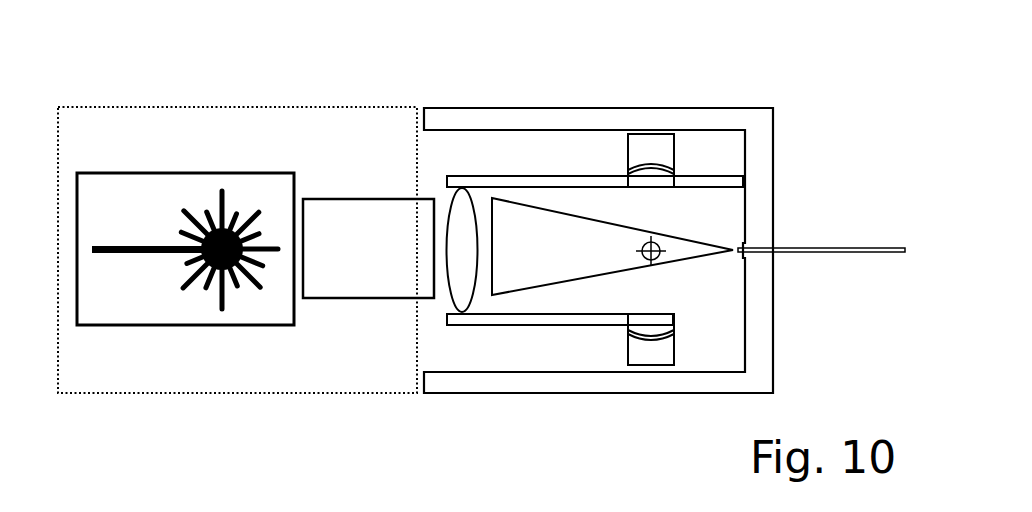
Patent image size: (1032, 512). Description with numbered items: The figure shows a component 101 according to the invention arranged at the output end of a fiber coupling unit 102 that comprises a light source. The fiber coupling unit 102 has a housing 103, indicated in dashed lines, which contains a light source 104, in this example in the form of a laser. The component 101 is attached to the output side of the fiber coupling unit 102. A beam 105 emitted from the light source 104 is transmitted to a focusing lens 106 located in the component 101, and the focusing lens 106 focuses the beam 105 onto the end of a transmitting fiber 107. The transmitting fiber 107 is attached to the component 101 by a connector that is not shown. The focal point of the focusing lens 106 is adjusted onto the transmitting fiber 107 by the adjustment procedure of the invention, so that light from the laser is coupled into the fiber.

The component 101 is at (609, 107).
The fiber coupling unit 102 is at (222, 73).
The housing 103 is at (378, 105).
The light source 104 is at (207, 328).
The beam 105 is at (372, 300).
The focusing lens 106 is at (465, 293).
The transmitting fiber 107 is at (796, 245).